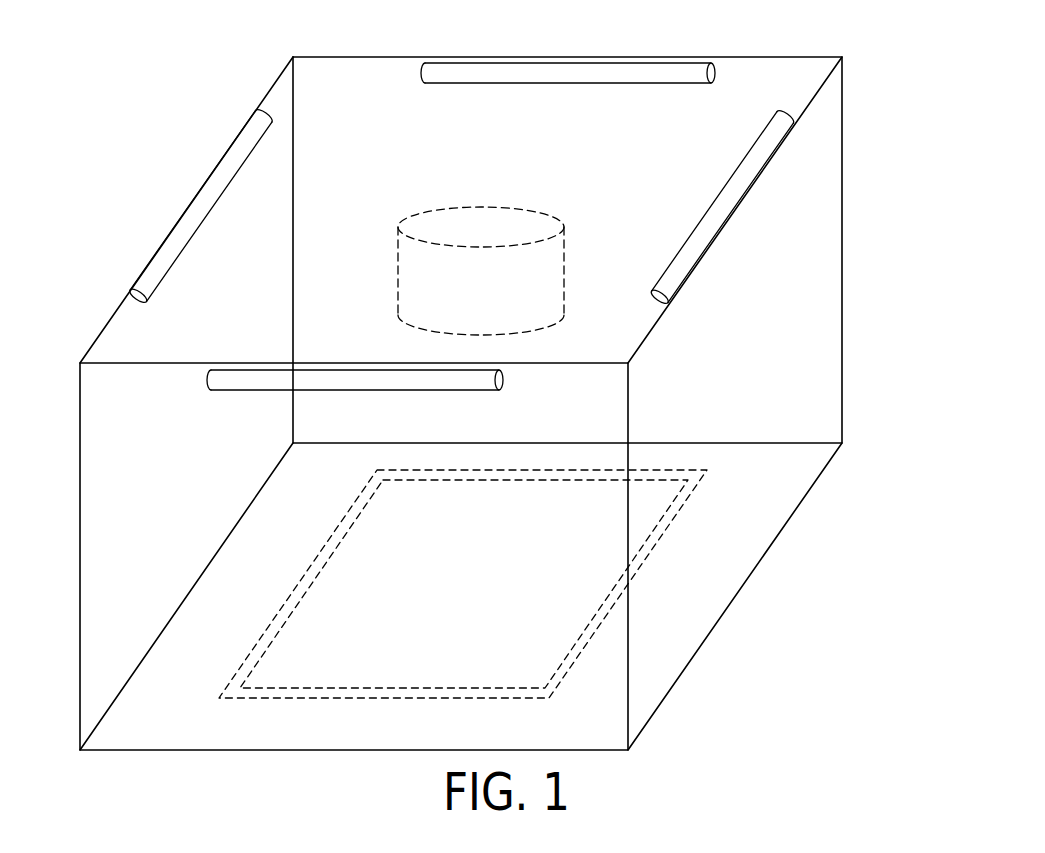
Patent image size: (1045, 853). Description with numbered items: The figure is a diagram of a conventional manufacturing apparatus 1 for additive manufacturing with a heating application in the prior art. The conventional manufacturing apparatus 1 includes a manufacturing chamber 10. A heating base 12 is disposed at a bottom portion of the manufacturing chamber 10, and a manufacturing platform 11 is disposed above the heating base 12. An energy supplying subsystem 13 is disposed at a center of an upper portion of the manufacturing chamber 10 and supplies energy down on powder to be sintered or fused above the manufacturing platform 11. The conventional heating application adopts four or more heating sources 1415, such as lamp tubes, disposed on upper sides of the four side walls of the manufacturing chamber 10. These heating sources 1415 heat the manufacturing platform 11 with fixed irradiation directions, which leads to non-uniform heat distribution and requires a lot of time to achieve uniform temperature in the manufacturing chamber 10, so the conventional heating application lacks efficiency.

The conventional manufacturing apparatus 1 is at (140, 70).
The manufacturing chamber 10 is at (493, 403).
The manufacturing platform 11 is at (496, 584).
The heating base 12 is at (529, 584).
The energy supplying subsystem 13 is at (453, 168).
The heating sources 1415 is at (595, 75).